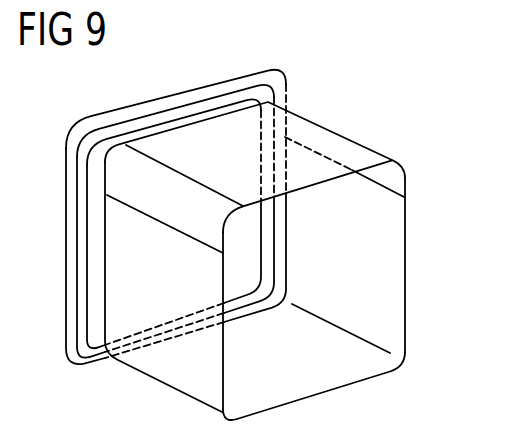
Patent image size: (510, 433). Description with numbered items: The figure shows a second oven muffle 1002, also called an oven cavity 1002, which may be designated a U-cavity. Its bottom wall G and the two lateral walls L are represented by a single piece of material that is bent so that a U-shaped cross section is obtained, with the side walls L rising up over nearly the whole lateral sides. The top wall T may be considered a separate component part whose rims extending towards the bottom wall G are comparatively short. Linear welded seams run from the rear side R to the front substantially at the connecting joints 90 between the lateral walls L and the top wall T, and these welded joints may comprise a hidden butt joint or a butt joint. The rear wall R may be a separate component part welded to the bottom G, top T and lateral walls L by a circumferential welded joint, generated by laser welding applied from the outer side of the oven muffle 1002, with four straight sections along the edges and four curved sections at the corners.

The second oven muffle 1002 is at (291, 240).
The connecting joints 90 is at (238, 195).
The rear side R is at (187, 92).
The top side T is at (313, 162).
The lateral sides L is at (406, 271).
The bottom side G is at (332, 388).